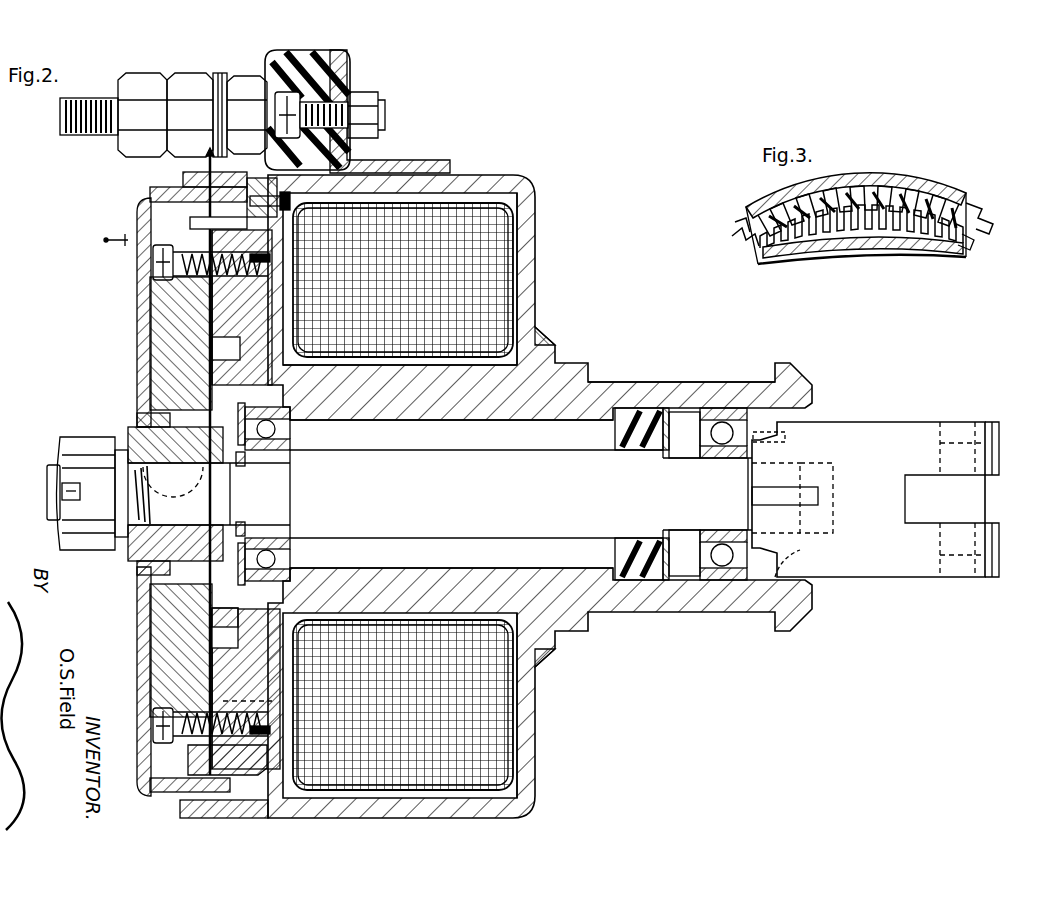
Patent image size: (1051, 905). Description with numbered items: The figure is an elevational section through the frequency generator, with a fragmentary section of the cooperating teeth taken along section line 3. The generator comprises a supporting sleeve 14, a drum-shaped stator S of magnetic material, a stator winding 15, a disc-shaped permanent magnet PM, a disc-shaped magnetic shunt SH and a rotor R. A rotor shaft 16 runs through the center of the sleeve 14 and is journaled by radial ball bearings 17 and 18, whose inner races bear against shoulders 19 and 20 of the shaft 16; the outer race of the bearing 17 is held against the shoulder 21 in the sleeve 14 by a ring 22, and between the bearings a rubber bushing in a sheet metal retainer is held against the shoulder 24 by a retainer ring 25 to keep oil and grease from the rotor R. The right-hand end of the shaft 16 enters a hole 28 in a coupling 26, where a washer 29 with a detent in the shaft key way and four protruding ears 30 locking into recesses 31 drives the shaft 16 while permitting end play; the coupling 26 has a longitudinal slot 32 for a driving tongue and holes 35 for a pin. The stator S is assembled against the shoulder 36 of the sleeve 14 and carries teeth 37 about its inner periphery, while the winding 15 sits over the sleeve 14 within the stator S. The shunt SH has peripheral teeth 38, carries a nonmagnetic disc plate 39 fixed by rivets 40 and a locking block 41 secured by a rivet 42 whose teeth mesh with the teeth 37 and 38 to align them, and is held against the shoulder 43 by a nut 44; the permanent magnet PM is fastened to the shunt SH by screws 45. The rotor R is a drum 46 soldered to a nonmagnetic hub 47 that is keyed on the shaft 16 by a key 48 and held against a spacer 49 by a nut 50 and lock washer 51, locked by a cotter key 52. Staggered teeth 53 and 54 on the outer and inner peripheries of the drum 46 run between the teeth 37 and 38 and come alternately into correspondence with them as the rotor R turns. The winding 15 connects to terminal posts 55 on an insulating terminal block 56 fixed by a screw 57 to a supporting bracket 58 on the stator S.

In FIG. 2, the section line 3 is at (208, 160).
In FIG. 2, the supporting sleeve 14 is at (660, 381).
In FIG. 2, the stator winding 15 is at (522, 222).
In FIG. 2, the rotor shaft 16 is at (48, 478).
In FIG. 2, the radial ball bearing 17 is at (289, 567).
In FIG. 2, the radial ball bearing 18 is at (664, 445).
In FIG. 2, the shoulder 19 is at (289, 455).
In FIG. 2, the shoulder 20 is at (700, 452).
In FIG. 2, the shoulder 21 is at (290, 430).
In FIG. 2, the ring 22 is at (238, 418).
In FIG. 2, the shoulder 24 is at (616, 426).
In FIG. 2, the retainer ring 25 is at (666, 418).
In FIG. 2, the coupling 26 is at (874, 422).
In FIG. 2, the hole 28 is at (816, 492).
In FIG. 2, the washer 29 is at (752, 484).
In FIG. 2, the protruding ears 30 is at (755, 432).
In FIG. 2, the recesses 31 is at (786, 437).
In FIG. 2, the longitudinal slot 32 is at (932, 476).
In FIG. 2, the holes 35 is at (985, 444).
In FIG. 2, the shoulder 36 is at (547, 326).
In FIG. 2, the teeth 37 is at (192, 180).
In FIG. 3, the teeth 37 is at (958, 200).
In FIG. 2, the teeth 38 is at (192, 224).
In FIG. 3, the teeth 38 is at (925, 250).
In FIG. 2, the nonmagnetic disc plate 39 is at (268, 322).
In FIG. 2, the rivets 40 is at (243, 700).
In FIG. 2, the locking block 41 is at (252, 183).
In FIG. 2, the rivet 42 is at (286, 208).
In FIG. 2, the shoulder 43 is at (282, 372).
In FIG. 2, the nut 44 is at (212, 636).
In FIG. 2, the screws 45 is at (157, 280).
In FIG. 2, the drum 46 is at (150, 386).
In FIG. 2, the hub 47 is at (132, 556).
In FIG. 2, the key 48 is at (205, 478).
In FIG. 2, the spacer 49 is at (240, 532).
In FIG. 2, the nut 50 is at (97, 541).
In FIG. 2, the lock washer 51 is at (124, 448).
In FIG. 2, the cotter key 52 is at (60, 494).
In FIG. 2, the teeth 53 is at (186, 797).
In FIG. 3, the teeth 53 is at (982, 222).
In FIG. 2, the teeth 54 is at (153, 196).
In FIG. 3, the teeth 54 is at (974, 239).
In FIG. 2, the terminal posts 55 is at (62, 118).
In FIG. 2, the terminal block 56 is at (337, 72).
In FIG. 2, the screw 57 is at (370, 112).
In FIG. 2, the supporting bracket 58 is at (375, 168).
In FIG. 2, the stator S is at (481, 177).
In FIG. 3, the stator S is at (925, 182).
In FIG. 2, the rotor R is at (140, 224).
In FIG. 2, the permanent magnet PM is at (152, 316).
In FIG. 2, the magnetic shunt SH is at (262, 292).
In FIG. 3, the magnetic shunt SH is at (950, 255).